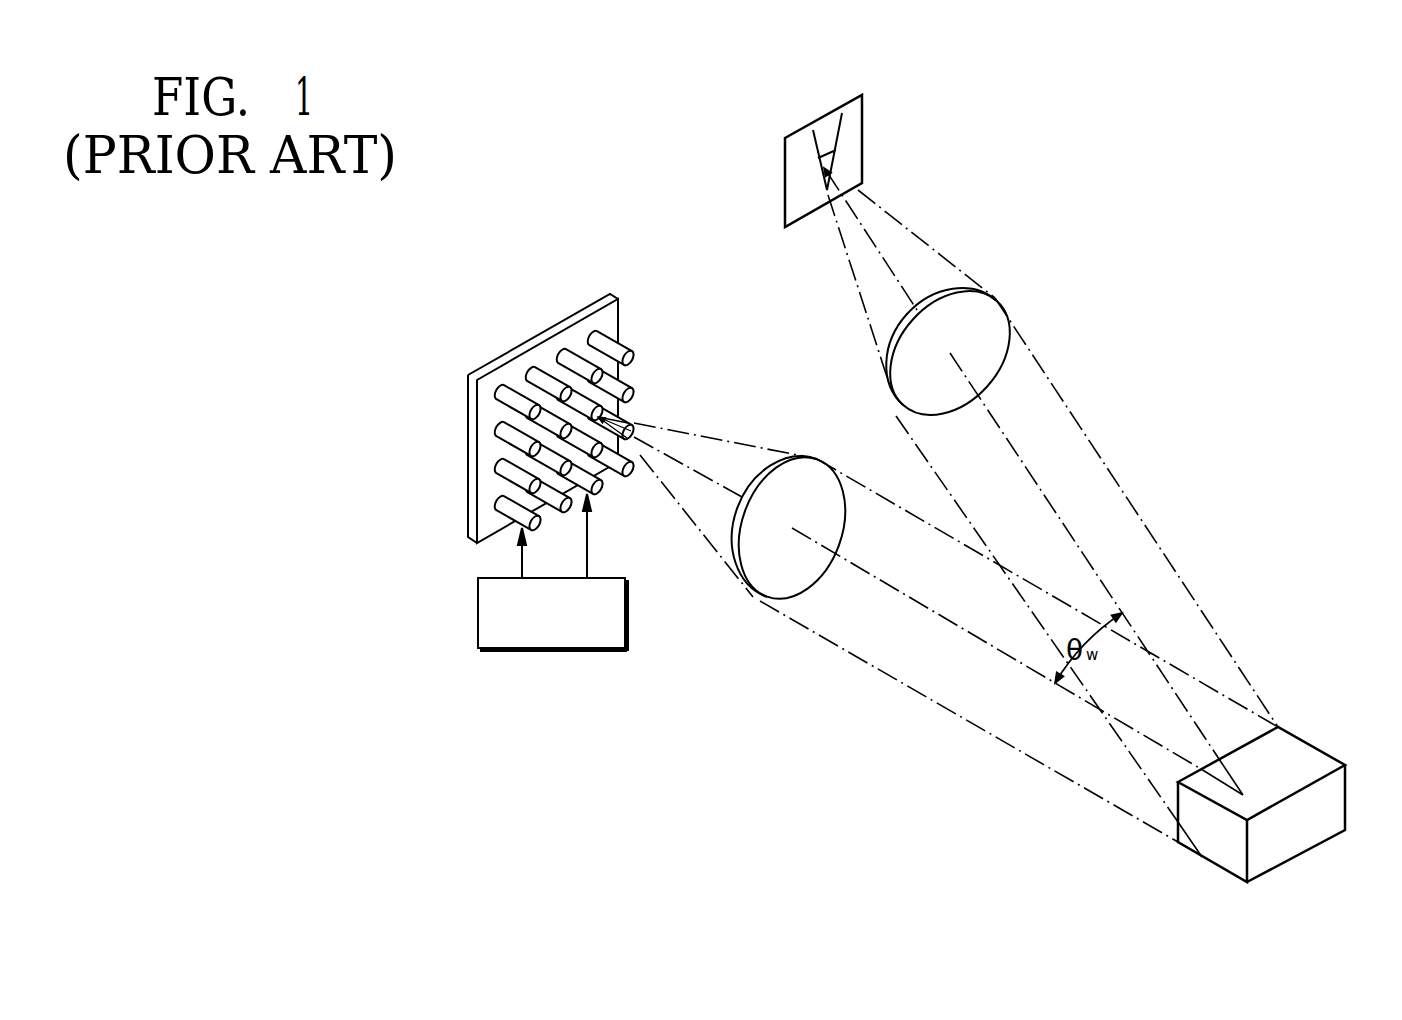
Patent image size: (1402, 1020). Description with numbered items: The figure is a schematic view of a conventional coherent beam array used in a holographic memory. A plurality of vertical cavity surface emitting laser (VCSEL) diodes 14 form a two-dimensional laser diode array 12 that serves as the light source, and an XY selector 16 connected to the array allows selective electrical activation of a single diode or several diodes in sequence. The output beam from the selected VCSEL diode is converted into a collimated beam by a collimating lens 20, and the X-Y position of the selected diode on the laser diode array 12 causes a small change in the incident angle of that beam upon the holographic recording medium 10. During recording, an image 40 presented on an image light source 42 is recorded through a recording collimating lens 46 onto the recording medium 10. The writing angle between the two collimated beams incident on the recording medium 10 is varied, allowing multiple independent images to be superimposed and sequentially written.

The holographic recording medium 10 is at (1307, 838).
The two-dimensional laser diode array 12 is at (472, 428).
The vertical cavity surface emitting laser (VCSEL) diode 14 is at (502, 503).
The XY selector 16 is at (478, 608).
The collimating lens 20 is at (758, 582).
The image 40 is at (798, 212).
The image light source 42 is at (785, 183).
The recording collimating lens 46 is at (1000, 342).